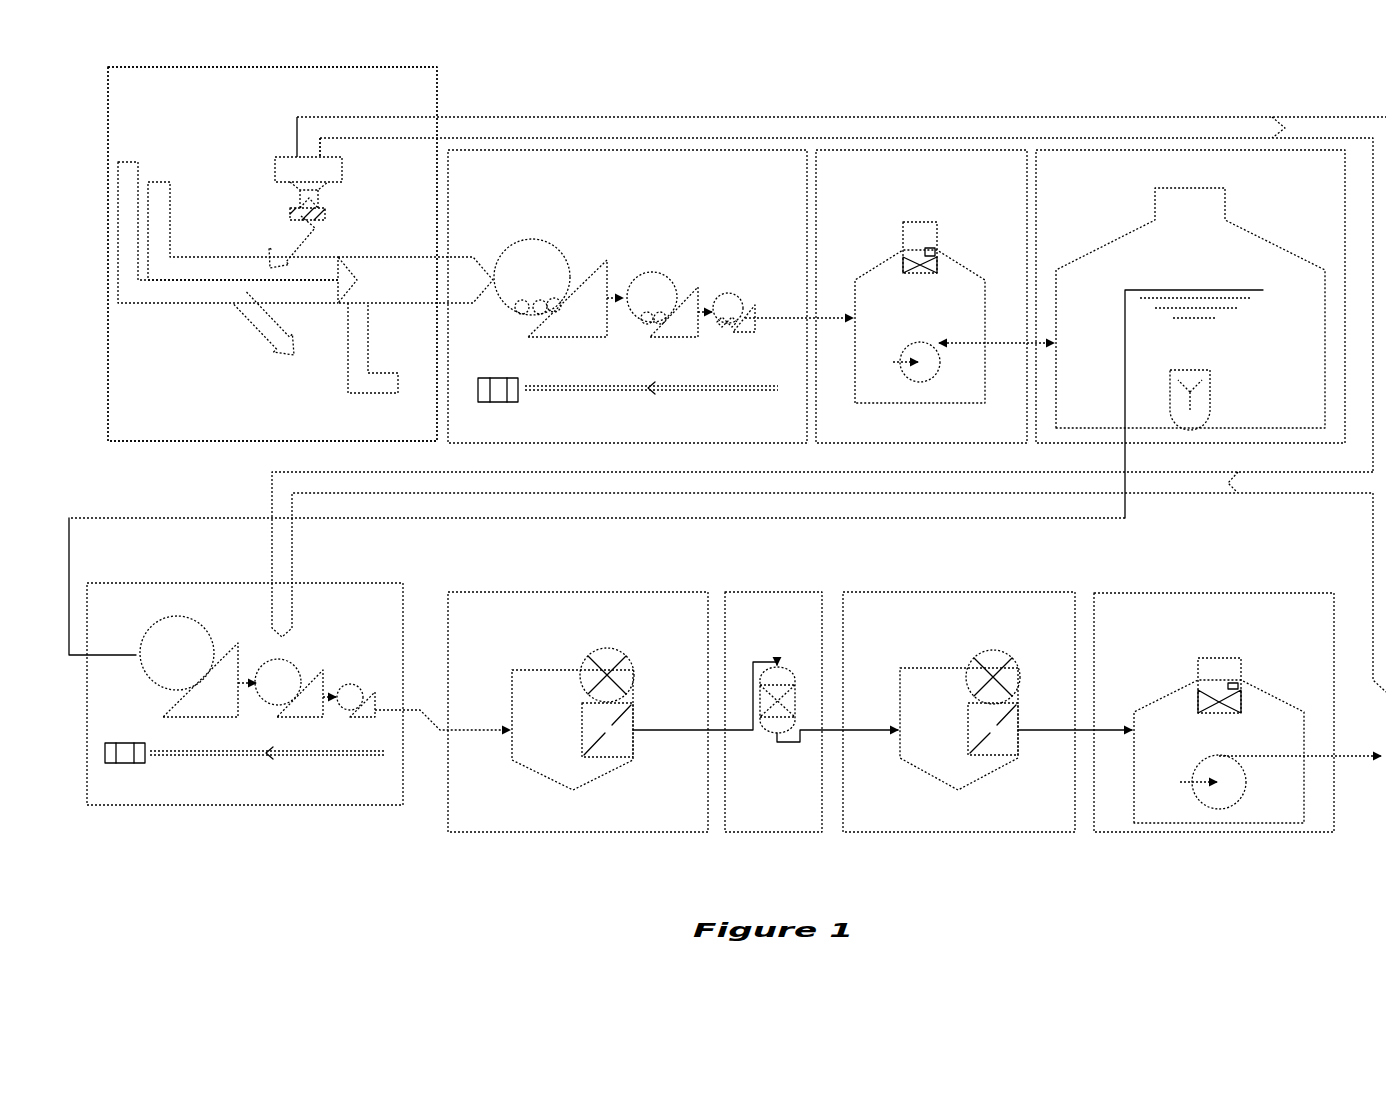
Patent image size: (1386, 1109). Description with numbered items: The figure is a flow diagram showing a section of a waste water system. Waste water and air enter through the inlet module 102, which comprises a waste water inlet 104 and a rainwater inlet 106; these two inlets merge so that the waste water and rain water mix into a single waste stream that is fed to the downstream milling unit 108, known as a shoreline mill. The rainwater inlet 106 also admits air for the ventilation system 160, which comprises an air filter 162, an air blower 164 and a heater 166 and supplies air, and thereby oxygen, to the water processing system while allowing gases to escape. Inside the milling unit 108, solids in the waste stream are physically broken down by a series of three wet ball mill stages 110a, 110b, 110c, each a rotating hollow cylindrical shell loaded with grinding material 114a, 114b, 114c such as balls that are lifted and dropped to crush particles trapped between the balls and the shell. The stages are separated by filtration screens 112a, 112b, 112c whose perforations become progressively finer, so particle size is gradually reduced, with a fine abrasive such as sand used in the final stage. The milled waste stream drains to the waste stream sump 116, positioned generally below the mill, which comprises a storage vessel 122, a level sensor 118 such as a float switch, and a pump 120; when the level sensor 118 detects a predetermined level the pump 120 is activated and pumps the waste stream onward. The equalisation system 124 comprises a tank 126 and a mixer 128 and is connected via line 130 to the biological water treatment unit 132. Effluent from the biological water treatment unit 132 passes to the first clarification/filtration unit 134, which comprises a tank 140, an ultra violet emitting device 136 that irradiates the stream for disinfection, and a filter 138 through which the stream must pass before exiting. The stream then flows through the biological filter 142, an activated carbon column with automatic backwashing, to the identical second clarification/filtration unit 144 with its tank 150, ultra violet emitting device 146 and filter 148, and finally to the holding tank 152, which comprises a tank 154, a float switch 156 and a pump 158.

The inlet module 102 is at (137, 328).
The waste water inlet 104 is at (124, 195).
The rainwater inlet 106 is at (167, 193).
The milling unit 108 is at (623, 168).
The first wet ball mill stage 110a is at (565, 255).
The second wet ball mill stage 110b is at (676, 275).
The third wet ball mill stage 110c is at (745, 305).
The first filtration screen 112a is at (553, 305).
The second filtration screen 112b is at (665, 320).
The third filtration screen 112c is at (748, 318).
The grinding material 114a is at (513, 300).
The grinding material 114b is at (638, 305).
The grinding material 114c is at (715, 318).
The waste stream sump 116 is at (945, 168).
The level sensor 118 is at (920, 255).
The pump 120 is at (935, 375).
The storage vessel 122 is at (960, 262).
The equalisation system 124 is at (1125, 168).
The tank 126 is at (1115, 237).
The mixer 128 is at (1210, 388).
The line 130 is at (272, 478).
The biological water treatment unit 132 is at (200, 782).
The first clarification/filtration unit 134 is at (540, 810).
The ultra violet emitting device 136 is at (625, 660).
The filter 138 is at (635, 743).
The tank 140 is at (512, 680).
The biological filter 142 is at (778, 805).
The second clarification/filtration unit 144 is at (940, 805).
The ultra violet emitting device 146 is at (985, 655).
The filter 148 is at (1020, 725).
The tank 150 is at (995, 772).
The holding tank 152 is at (1190, 612).
The tank 154 is at (1250, 690).
The float switch 156 is at (1220, 690).
The pump 158 is at (1225, 808).
The ventilation system 160 is at (362, 93).
The air filter 162 is at (330, 215).
The air blower 164 is at (284, 157).
The heater 166 is at (343, 171).